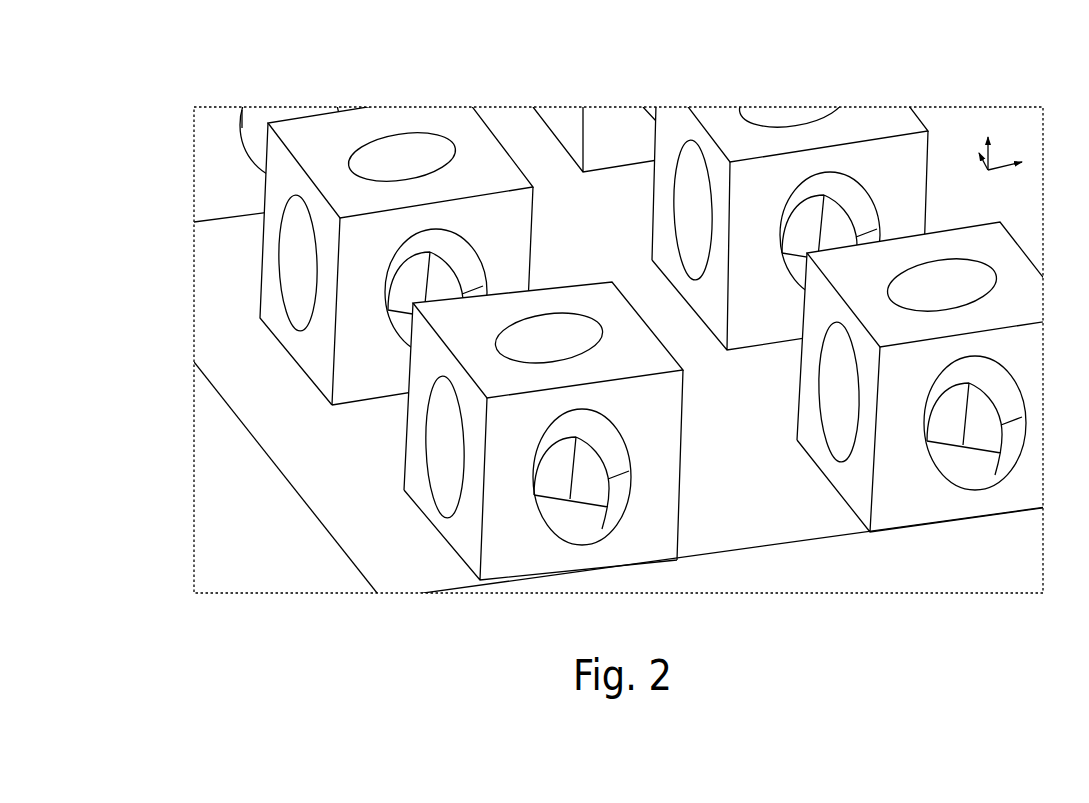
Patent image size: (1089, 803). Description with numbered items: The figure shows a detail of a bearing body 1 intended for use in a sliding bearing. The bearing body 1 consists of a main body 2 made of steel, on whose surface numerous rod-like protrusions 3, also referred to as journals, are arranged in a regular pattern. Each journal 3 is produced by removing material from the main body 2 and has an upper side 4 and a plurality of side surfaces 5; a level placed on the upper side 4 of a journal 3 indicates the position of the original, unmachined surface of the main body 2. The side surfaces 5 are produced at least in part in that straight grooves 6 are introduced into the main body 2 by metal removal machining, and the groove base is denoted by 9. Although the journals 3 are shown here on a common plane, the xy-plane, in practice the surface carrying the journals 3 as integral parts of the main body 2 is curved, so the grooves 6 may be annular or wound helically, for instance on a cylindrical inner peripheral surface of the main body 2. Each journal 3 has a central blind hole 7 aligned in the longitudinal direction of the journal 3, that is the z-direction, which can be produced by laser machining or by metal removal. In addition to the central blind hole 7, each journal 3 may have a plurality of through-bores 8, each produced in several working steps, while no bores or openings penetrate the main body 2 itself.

The bearing body 1 is at (178, 97).
The main body 2 is at (595, 500).
The rod-like protrusion 3 is at (262, 260).
The upper side 4 is at (334, 222).
The side surface 5 is at (231, 264).
The groove 6 is at (358, 452).
The central blind hole 7 is at (402, 154).
The through-bore 8 is at (450, 486).
The groove base 9 is at (557, 158).